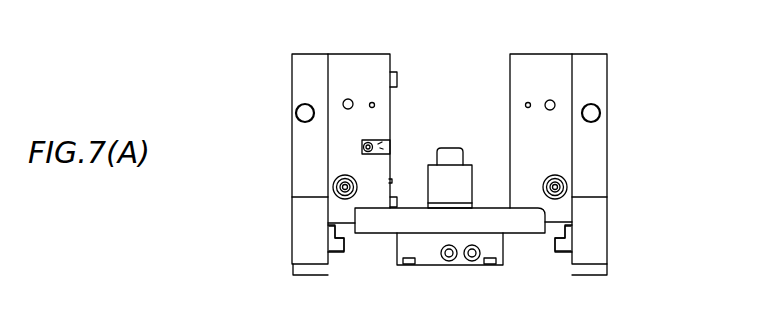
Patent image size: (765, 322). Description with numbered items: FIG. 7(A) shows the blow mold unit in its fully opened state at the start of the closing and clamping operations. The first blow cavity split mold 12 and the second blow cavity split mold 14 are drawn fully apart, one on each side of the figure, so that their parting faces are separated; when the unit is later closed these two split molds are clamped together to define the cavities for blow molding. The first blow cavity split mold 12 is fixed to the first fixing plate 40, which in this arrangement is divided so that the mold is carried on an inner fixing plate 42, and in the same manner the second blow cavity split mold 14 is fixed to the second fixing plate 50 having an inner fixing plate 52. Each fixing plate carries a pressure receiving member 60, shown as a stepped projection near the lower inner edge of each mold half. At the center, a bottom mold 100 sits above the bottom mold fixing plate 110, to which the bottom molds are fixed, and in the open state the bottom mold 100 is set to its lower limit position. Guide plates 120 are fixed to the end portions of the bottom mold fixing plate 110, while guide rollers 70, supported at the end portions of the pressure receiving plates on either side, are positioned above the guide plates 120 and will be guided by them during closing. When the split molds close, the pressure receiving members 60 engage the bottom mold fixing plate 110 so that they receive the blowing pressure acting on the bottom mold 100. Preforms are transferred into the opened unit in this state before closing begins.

The first blow cavity split mold 12 is at (616, 140).
The second blow cavity split mold 14 is at (287, 142).
The first fixing plate 40 is at (647, 164).
The inner fixing plate 42 is at (608, 94).
The second fixing plate 50 is at (253, 164).
The inner fixing plate 52 is at (292, 97).
The pressure receiving member 60 is at (334, 252).
The guide roller 70 is at (337, 196).
The bottom mold 100 is at (450, 146).
The bottom mold fixing plate 110 is at (449, 266).
The guide plate 120 is at (526, 229).